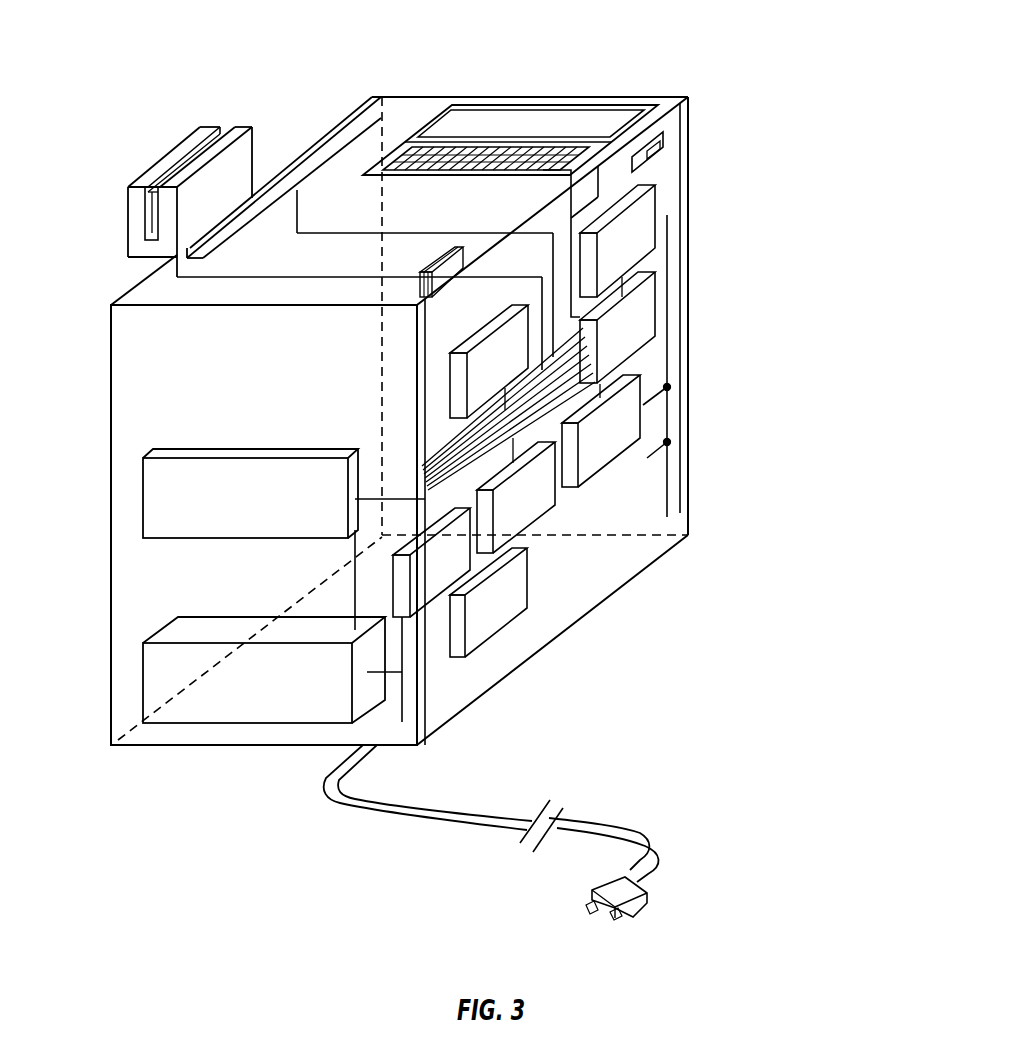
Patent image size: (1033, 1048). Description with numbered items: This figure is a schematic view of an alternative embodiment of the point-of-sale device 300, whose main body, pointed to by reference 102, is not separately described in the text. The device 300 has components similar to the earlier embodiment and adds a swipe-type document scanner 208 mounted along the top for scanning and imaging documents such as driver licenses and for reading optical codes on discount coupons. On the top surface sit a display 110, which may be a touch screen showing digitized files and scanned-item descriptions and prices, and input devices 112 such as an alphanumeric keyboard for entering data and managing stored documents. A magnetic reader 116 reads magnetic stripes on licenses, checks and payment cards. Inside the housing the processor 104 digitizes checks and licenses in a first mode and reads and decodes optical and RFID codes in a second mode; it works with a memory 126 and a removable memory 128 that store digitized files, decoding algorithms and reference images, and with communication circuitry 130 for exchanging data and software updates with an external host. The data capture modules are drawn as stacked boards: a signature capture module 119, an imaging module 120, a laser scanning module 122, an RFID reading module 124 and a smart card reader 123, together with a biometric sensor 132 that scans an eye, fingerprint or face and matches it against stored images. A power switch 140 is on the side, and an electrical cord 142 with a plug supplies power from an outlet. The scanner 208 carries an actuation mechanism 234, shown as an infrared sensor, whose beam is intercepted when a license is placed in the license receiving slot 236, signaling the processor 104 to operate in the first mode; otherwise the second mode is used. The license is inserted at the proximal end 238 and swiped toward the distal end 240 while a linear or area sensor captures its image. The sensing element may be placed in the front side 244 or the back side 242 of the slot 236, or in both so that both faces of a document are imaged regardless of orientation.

The device 300 is at (298, 38).
The housing 102 is at (403, 98).
The processor 104 is at (647, 322).
The display 110 is at (555, 128).
The input devices 112 is at (473, 157).
The magnetic reader 116 is at (343, 143).
The signature capture module 119 is at (142, 507).
The imaging module 120 is at (498, 362).
The laser scanning module 122 is at (520, 510).
The smart card reader 123 is at (421, 268).
The RFID reading module 124 is at (430, 585).
The memory 126 is at (638, 237).
The removable memory 128 is at (142, 688).
The communication circuitry 130 is at (597, 450).
The biometric sensor 132 is at (490, 598).
The power switch 140 is at (647, 168).
The electrical cord 142 is at (632, 838).
The document scanner 208 is at (149, 162).
The actuation mechanism 234 is at (133, 194).
The license receiving slot 236 is at (223, 127).
The proximal end 238 is at (145, 228).
The distal end 240 is at (238, 126).
The back side 242 is at (150, 188).
The front side 244 is at (175, 165).